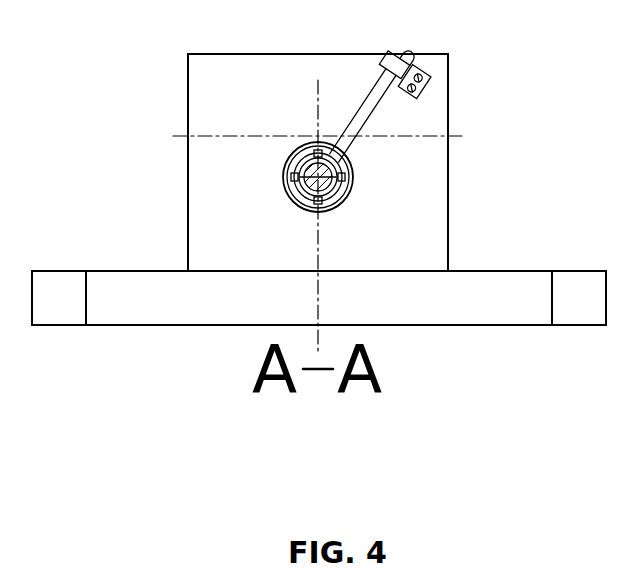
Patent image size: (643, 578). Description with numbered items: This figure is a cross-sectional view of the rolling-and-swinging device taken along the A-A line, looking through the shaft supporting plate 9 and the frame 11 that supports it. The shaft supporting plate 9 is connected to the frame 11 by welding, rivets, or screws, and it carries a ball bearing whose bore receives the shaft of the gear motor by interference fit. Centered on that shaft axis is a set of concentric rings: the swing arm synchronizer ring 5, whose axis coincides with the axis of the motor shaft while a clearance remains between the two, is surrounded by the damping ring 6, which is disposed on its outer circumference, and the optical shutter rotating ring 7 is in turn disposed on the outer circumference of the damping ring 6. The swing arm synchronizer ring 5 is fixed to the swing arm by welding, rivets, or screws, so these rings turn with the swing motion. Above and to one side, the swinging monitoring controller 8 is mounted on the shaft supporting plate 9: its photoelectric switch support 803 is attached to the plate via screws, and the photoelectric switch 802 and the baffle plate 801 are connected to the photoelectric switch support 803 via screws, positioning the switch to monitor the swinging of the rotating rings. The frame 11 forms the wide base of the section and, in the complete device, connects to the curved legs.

The swing arm synchronizer ring 5 is at (318, 176).
The damping ring 6 is at (343, 183).
The optical shutter rotating ring 7 is at (343, 188).
The swinging monitoring controller 8 is at (450, 98).
The baffle plate 801 is at (393, 53).
The photoelectric switch 802 is at (420, 70).
The photoelectric switch support 803 is at (418, 82).
The shaft supporting plate 9 is at (207, 97).
The frame 11 is at (145, 283).